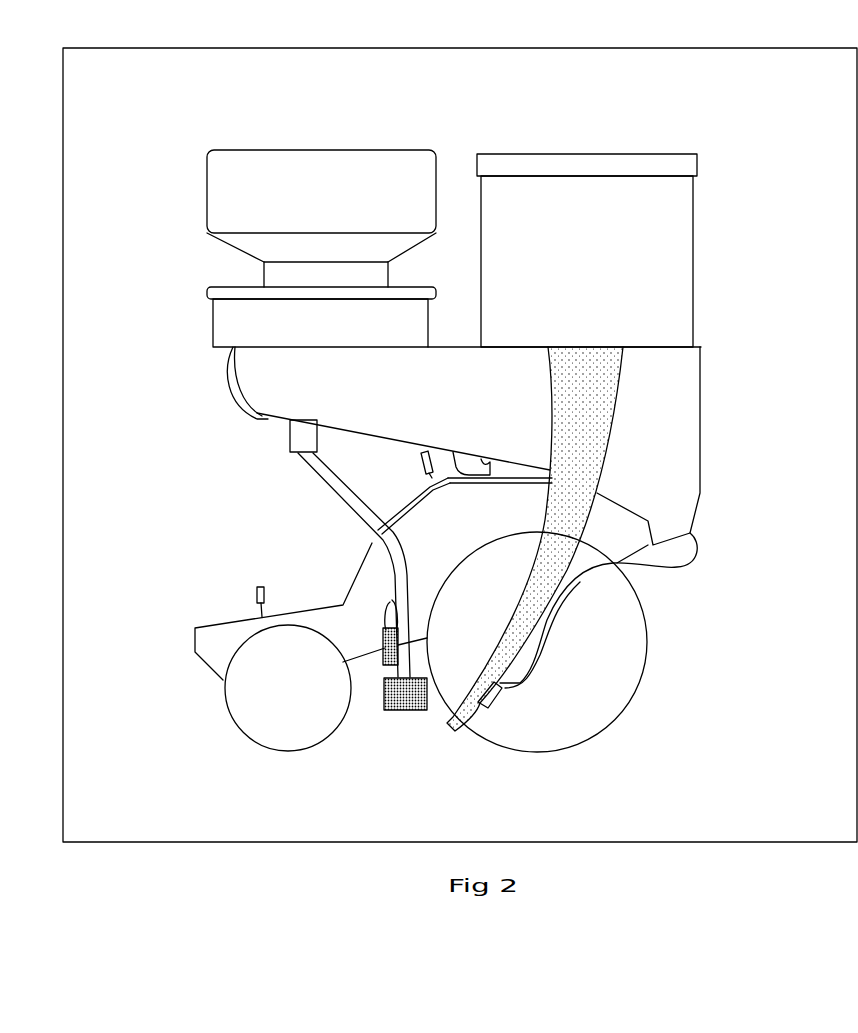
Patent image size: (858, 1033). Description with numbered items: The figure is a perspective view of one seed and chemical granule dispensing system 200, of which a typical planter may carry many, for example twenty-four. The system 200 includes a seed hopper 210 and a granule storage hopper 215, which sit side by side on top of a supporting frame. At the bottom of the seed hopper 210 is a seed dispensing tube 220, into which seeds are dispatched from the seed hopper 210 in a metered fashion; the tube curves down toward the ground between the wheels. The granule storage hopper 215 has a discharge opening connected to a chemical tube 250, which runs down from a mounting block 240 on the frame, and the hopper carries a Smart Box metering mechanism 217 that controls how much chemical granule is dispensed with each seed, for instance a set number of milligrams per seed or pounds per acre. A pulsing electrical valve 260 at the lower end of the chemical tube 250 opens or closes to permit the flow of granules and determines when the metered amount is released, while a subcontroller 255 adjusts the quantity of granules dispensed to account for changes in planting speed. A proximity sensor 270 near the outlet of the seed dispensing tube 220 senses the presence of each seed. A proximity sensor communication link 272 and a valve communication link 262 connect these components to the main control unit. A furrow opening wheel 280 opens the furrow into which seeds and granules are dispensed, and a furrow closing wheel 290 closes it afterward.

The system 200 is at (590, 48).
The seed hopper 210 is at (670, 219).
The granule storage hopper 215 is at (227, 316).
The metering mechanism 217 is at (318, 173).
The seed dispensing tube 220 is at (528, 627).
The mounting block 240 is at (303, 434).
The chemical tube 250 is at (342, 523).
The subcontroller 255 is at (383, 640).
The pulsing electrical valve 260 is at (403, 712).
The valve communication link 262 is at (220, 397).
The proximity sensor 270 is at (503, 684).
The proximity sensor communication link 272 is at (712, 545).
The furrow opening wheel 280 is at (625, 720).
The furrow closing wheel 290 is at (238, 692).